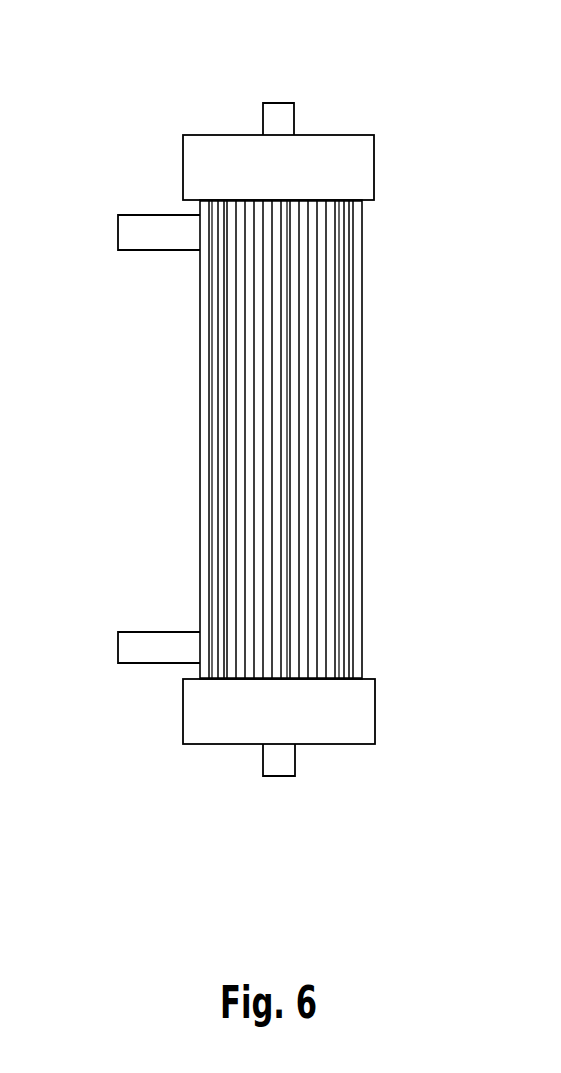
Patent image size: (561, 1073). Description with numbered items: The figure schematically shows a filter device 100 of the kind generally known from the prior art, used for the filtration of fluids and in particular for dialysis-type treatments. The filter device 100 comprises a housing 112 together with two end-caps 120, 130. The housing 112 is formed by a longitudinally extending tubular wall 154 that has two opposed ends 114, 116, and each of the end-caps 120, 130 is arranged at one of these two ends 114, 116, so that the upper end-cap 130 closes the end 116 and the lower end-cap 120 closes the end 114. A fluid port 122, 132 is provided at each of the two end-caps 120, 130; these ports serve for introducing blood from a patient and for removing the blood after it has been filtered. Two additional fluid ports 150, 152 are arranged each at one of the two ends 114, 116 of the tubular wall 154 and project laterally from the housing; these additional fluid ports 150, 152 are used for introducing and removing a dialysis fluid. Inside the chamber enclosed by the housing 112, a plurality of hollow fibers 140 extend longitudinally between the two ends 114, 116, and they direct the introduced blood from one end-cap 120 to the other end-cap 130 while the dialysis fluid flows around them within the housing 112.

The filter device 100 is at (174, 88).
The housing 112 is at (372, 405).
The end of tubular wall 114 is at (360, 677).
The end of tubular wall 116 is at (362, 202).
The end-cap 120 is at (393, 675).
The fluid port 122 is at (282, 767).
The end-cap 130 is at (393, 108).
The fluid port 132 is at (280, 117).
The hollow fibers 140 is at (225, 388).
The additional fluid port 150 is at (140, 232).
The additional fluid port 152 is at (140, 649).
The tubular wall 154 is at (361, 327).